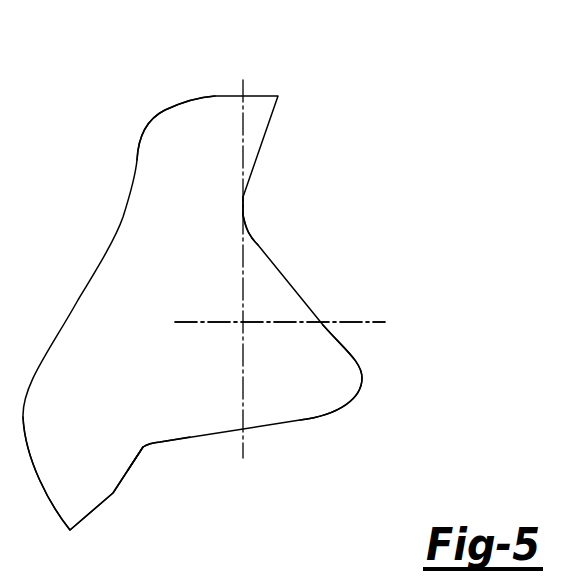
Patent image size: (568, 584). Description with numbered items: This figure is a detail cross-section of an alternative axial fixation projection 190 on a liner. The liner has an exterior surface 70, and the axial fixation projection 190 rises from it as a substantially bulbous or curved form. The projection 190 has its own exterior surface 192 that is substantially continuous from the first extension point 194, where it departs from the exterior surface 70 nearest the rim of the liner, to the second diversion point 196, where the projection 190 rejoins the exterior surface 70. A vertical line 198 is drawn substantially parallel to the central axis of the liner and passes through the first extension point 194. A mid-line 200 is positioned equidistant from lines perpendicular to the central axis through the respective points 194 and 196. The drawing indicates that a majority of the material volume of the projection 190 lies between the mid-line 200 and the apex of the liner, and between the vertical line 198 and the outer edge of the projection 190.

The exterior surface 70 is at (113, 493).
The axial fixation projection 190 is at (390, 355).
The exterior surface 192 is at (363, 390).
The first extension point 194 is at (243, 215).
The second diversion point 196 is at (158, 443).
The vertical line 198 is at (228, 116).
The mid-line 200 is at (212, 322).